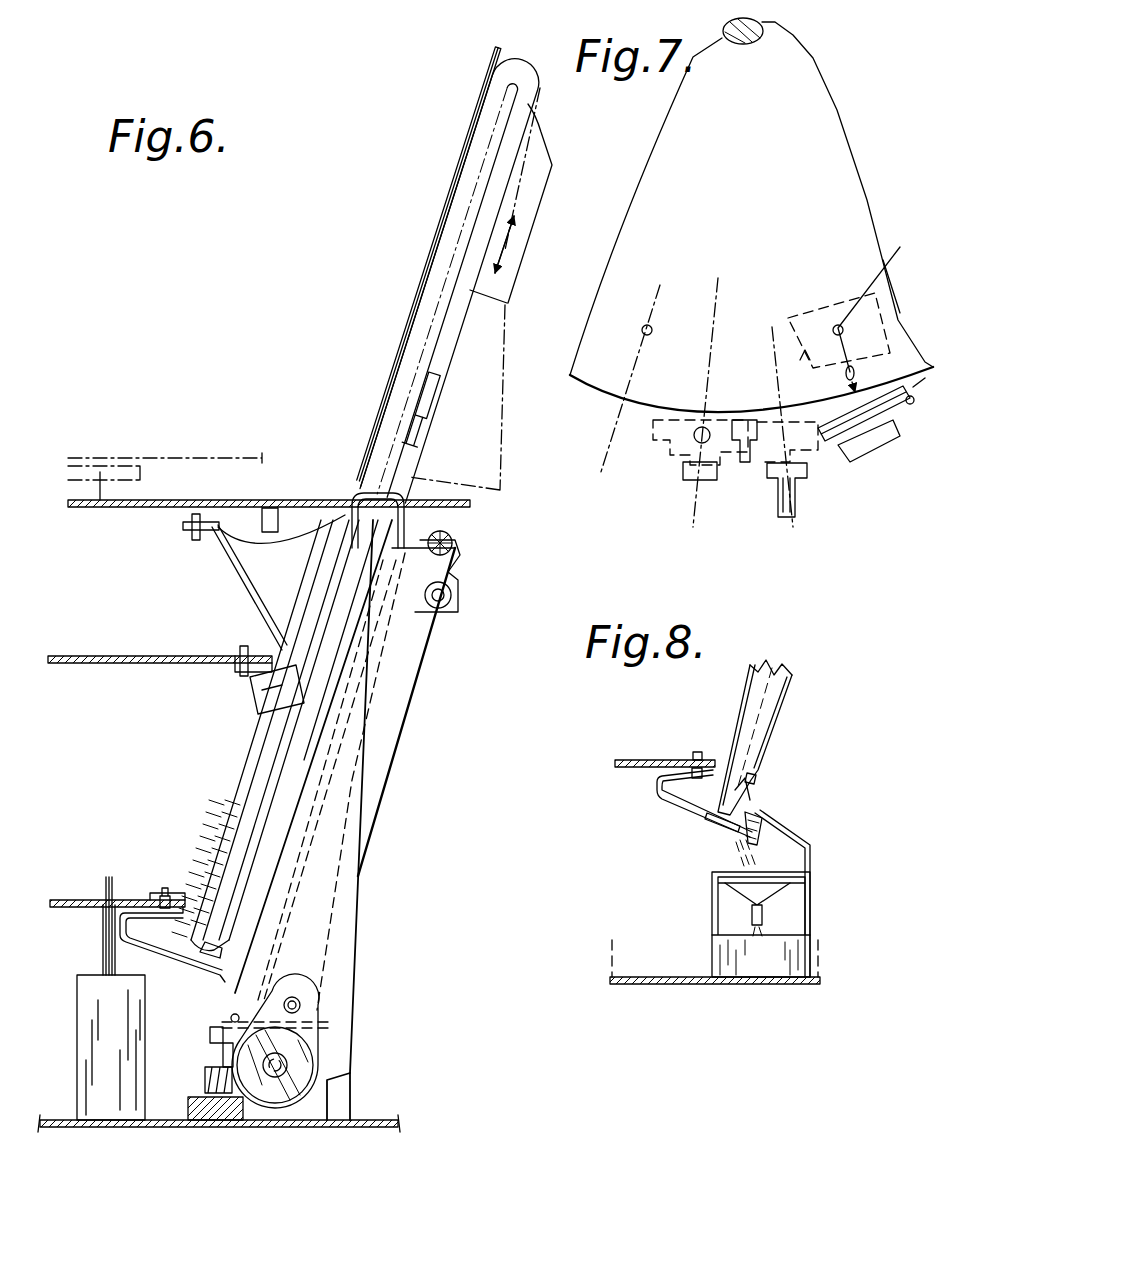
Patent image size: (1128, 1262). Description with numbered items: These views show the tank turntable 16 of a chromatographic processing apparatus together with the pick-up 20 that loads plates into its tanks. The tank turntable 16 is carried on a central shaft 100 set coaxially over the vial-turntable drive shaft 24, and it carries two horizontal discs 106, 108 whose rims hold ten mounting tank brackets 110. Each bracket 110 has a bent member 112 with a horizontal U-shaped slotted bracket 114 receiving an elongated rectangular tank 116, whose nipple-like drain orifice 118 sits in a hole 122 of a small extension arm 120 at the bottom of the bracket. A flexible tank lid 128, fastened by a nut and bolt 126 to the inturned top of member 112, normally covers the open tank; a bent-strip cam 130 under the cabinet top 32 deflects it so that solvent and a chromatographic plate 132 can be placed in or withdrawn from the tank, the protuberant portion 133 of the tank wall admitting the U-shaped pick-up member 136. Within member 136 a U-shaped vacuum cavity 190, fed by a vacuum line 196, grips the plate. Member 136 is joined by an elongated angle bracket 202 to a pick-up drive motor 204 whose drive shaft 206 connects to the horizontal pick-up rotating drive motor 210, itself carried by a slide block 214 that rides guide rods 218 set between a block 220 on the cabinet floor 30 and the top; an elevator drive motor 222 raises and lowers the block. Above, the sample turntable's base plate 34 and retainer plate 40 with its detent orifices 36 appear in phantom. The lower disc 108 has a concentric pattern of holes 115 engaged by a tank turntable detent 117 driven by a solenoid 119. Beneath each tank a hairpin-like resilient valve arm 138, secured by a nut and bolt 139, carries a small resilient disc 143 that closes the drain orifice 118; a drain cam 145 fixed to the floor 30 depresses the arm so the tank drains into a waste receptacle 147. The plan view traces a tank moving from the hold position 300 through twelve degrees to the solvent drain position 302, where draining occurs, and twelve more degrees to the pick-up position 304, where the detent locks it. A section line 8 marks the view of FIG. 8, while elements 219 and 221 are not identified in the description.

In FIG. 7, the section line 8 is at (808, 303).
In FIG. 6, the tank turntable 16 is at (118, 666).
In FIG. 6, the pick-up arm 20 is at (512, 335).
In FIG. 7, the drive shaft 24 is at (765, 40).
In FIG. 6, the floor 30 is at (145, 1127).
In FIG. 8, the floor 30 is at (745, 985).
In FIG. 6, the cabinet top 32 is at (226, 500).
In FIG. 6, the base plate 34 is at (100, 480).
In FIG. 6, the detent orifices 36 is at (108, 877).
In FIG. 6, the retainer plate 40 is at (262, 458).
In FIG. 7, the central shaft 100 is at (742, 45).
In FIG. 6, the disc 106 is at (158, 656).
In FIG. 7, the disc 106 is at (790, 220).
In FIG. 6, the lower disc 108 is at (70, 900).
In FIG. 8, the lower disc 108 is at (636, 760).
In FIG. 6, the mounting tank brackets 110 is at (228, 786).
In FIG. 8, the mounting tank brackets 110 is at (742, 702).
In FIG. 6, the bent member 112 is at (246, 588).
In FIG. 6, the U-shaped slotted bracket 114 is at (272, 694).
In FIG. 7, the holes 115 is at (643, 333).
In FIG. 6, the tank 116 is at (320, 584).
In FIG. 7, the tank 116 is at (660, 440).
In FIG. 8, the tank 116 is at (770, 742).
In FIG. 6, the tank turntable detent 117 is at (103, 946).
In FIG. 7, the tank turntable detent 117 is at (905, 240).
In FIG. 6, the drain orifice 118 is at (200, 950).
In FIG. 8, the drain orifice 118 is at (738, 803).
In FIG. 6, the solenoid 119 is at (100, 1021).
In FIG. 7, the solenoid 119 is at (821, 393).
In FIG. 7, the extension arm 120 is at (683, 470).
In FIG. 8, the extension arm 120 is at (757, 780).
In FIG. 7, the hole 122 is at (745, 472).
In FIG. 6, the nut and bolt 126 is at (190, 531).
In FIG. 6, the tank lid 128 is at (302, 540).
In FIG. 6, the cam 130 is at (350, 500).
In FIG. 6, the chromatographic plate 132 is at (352, 468).
In FIG. 6, the protuberant portion 133 is at (320, 630).
In FIG. 7, the protuberant portion 133 is at (828, 468).
In FIG. 6, the U-shaped pick-up member 136 is at (538, 110).
In FIG. 6, the valve arm 138 is at (248, 975).
In FIG. 7, the valve arm 138 is at (885, 448).
In FIG. 8, the valve arm 138 is at (665, 802).
In FIG. 6, the nut and bolt 139 is at (195, 896).
In FIG. 8, the nut and bolt 139 is at (698, 755).
In FIG. 6, the resilient disc 143 is at (190, 958).
In FIG. 8, the resilient disc 143 is at (708, 822).
In FIG. 7, the exhaust cam 145 is at (778, 470).
In FIG. 8, the exhaust cam 145 is at (790, 832).
In FIG. 8, the waste receptacle 147 is at (790, 953).
In FIG. 6, the vacuum cavity 190 is at (392, 493).
In FIG. 6, the vacuum line 196 is at (312, 768).
In FIG. 6, the angle bracket 202 is at (370, 672).
In FIG. 6, the pick-up drive motor 204 is at (300, 1062).
In FIG. 6, the drive shaft 206 is at (294, 998).
In FIG. 6, the pick-up rotating drive motor 210 is at (223, 1062).
In FIG. 6, the slide block 214 is at (210, 1035).
In FIG. 6, the guide rods 218 is at (350, 750).
In FIG. 6, the frame side 219 is at (378, 817).
In FIG. 6, the block 220 is at (226, 1127).
In FIG. 6, the belt 221 is at (340, 1003).
In FIG. 6, the elevator drive motor 222 is at (315, 1105).
In FIG. 7, the hold position 300 is at (680, 478).
In FIG. 7, the solvent drain position 302 is at (830, 482).
In FIG. 7, the pick-up position 304 is at (900, 443).